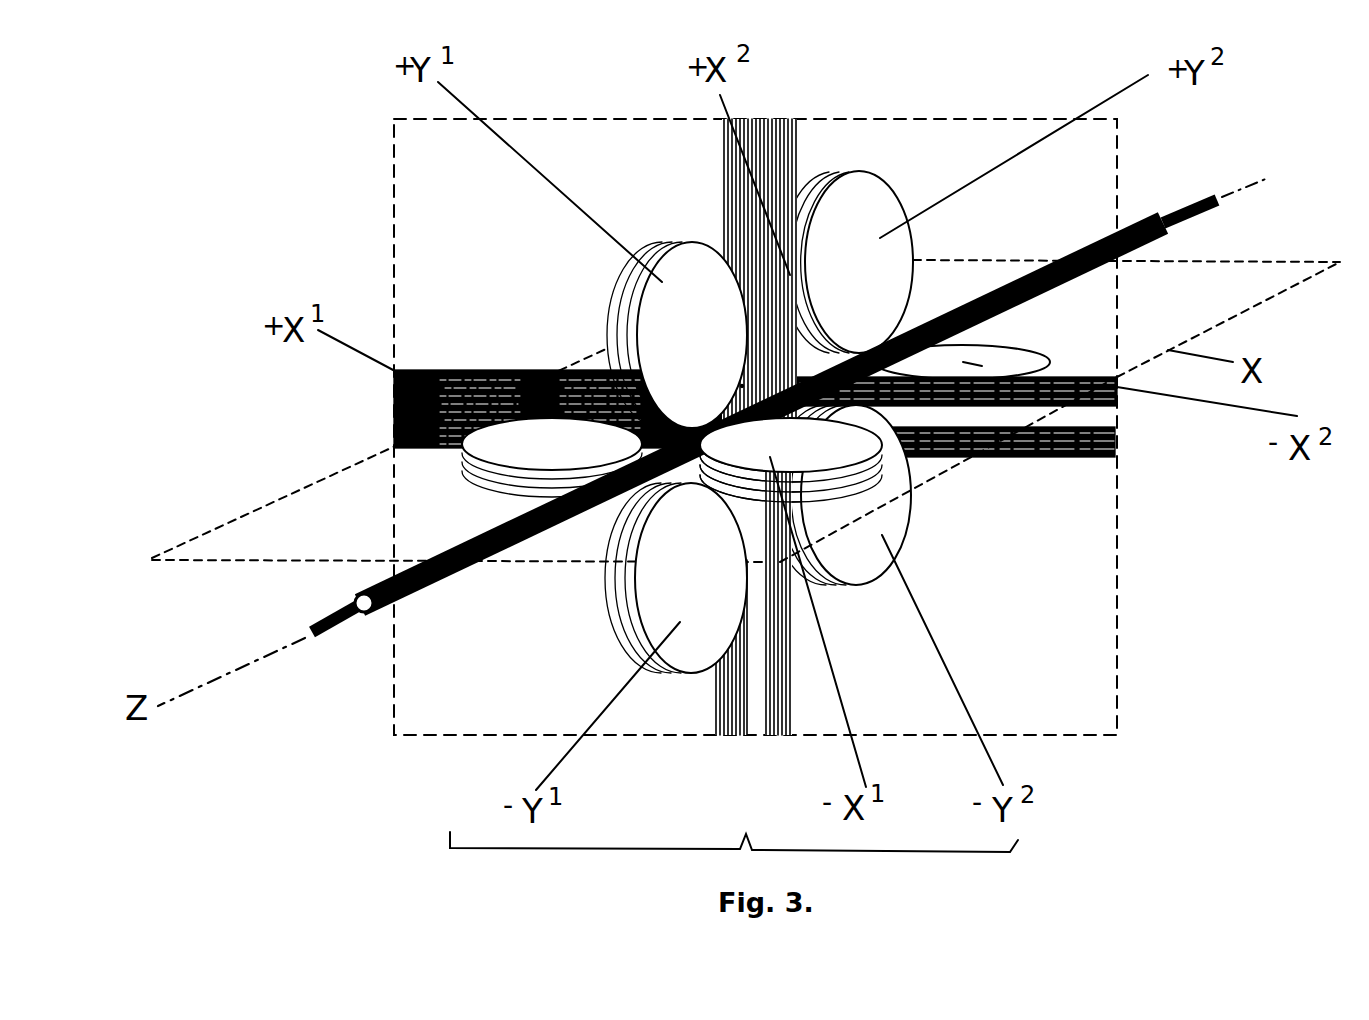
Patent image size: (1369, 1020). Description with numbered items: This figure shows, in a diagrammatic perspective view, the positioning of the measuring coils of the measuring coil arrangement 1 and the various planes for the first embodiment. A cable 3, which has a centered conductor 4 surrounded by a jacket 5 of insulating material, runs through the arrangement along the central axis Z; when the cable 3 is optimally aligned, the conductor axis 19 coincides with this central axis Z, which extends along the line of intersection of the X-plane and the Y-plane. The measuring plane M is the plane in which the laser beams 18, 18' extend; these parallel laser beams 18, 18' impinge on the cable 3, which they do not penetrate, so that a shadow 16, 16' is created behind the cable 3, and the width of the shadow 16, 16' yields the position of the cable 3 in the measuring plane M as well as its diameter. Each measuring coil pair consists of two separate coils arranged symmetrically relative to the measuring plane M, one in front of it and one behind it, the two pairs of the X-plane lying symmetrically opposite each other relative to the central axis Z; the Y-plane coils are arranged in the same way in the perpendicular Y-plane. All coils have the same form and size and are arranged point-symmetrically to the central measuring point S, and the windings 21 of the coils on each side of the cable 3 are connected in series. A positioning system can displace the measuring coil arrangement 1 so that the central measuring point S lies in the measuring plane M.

The measuring coil arrangement 1 is at (734, 822).
The cable 3 is at (334, 709).
The conductor 4 is at (1186, 212).
The jacket 5 is at (354, 597).
The shadow 16 is at (1035, 470).
The shadow 16' is at (736, 627).
The laser beam 18 is at (476, 413).
The laser beam 18' is at (819, 254).
The conductor axis 19 is at (231, 695).
The windings 21 is at (890, 190).
The central measuring point S is at (742, 385).
The measuring plane M is at (1117, 660).